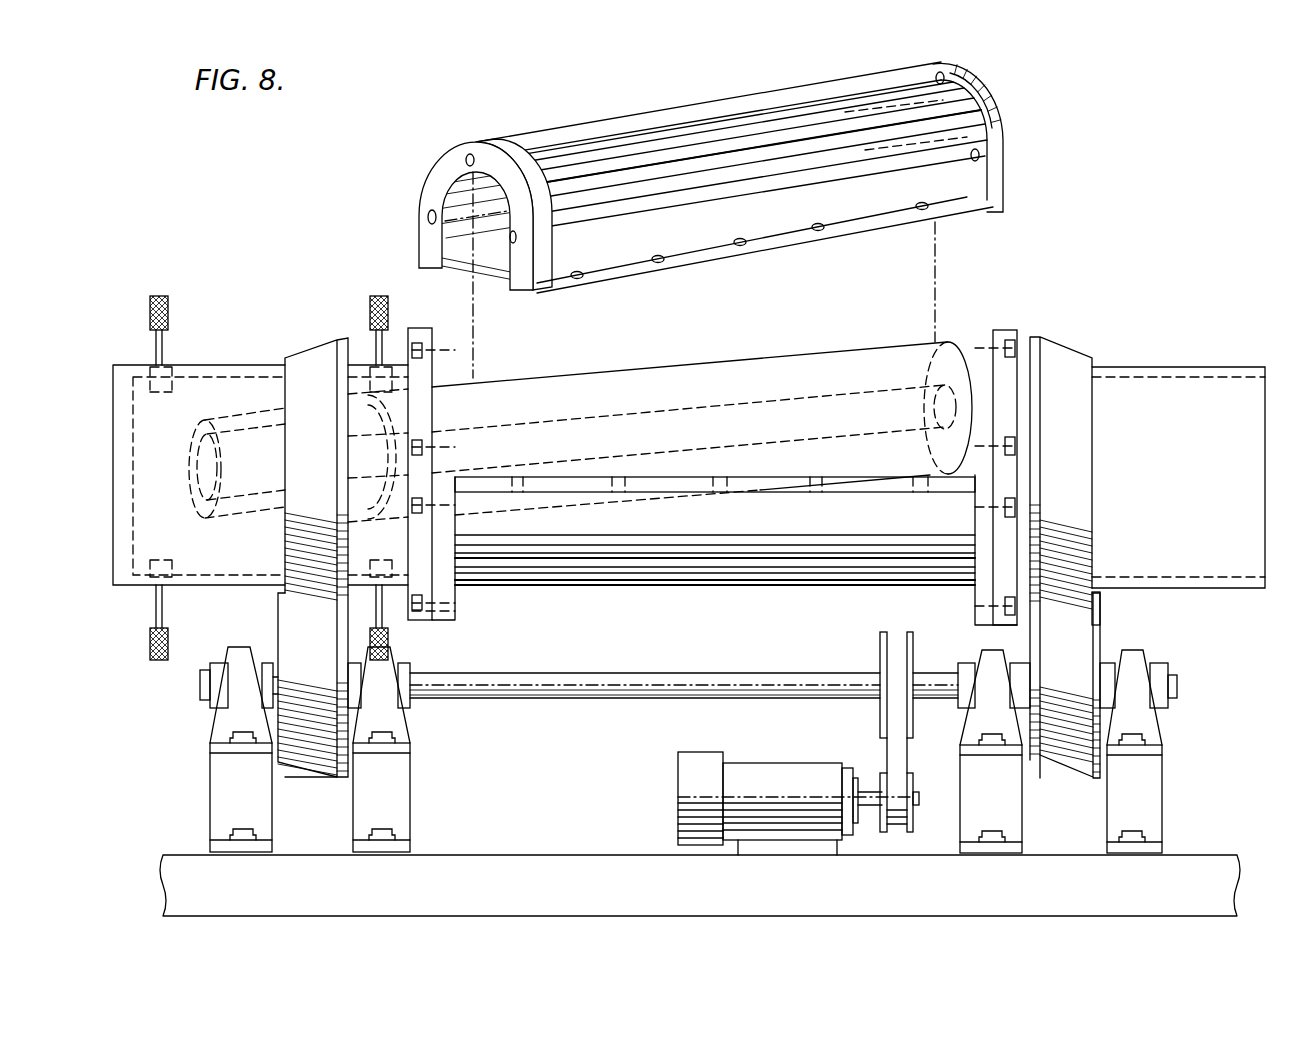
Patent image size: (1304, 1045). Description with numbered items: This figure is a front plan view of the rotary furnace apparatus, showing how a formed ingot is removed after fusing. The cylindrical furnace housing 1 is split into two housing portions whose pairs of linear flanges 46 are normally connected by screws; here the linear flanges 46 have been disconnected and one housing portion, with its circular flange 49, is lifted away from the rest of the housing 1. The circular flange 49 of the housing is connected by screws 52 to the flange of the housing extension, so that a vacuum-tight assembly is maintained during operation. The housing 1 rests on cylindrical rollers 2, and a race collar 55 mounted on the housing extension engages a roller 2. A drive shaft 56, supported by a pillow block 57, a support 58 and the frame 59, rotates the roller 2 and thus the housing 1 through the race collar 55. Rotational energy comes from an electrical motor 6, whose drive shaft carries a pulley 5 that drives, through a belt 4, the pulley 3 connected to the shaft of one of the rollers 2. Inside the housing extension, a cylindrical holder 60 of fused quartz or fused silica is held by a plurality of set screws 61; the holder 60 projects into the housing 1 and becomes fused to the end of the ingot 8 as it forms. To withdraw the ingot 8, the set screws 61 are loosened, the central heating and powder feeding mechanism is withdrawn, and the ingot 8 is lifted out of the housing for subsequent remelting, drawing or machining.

The cylindrical furnace housing 1 is at (671, 140).
The cylindrical roller 2 is at (308, 765).
The pulley 3 is at (878, 643).
The belt 4 is at (897, 753).
The pulley 5 is at (910, 815).
The electrical motor 6 is at (783, 772).
The ingot 8 is at (730, 372).
The linear flange 46 is at (783, 236).
The circular flange 49 is at (484, 141).
The screw 52 is at (422, 330).
The race collar 55 is at (307, 367).
The drive shaft 56 is at (470, 685).
The pillow block 57 is at (225, 718).
The support 58 is at (228, 790).
The frame 59 is at (1200, 868).
The cylindrical holder 60 is at (262, 520).
The set screw 61 is at (168, 316).